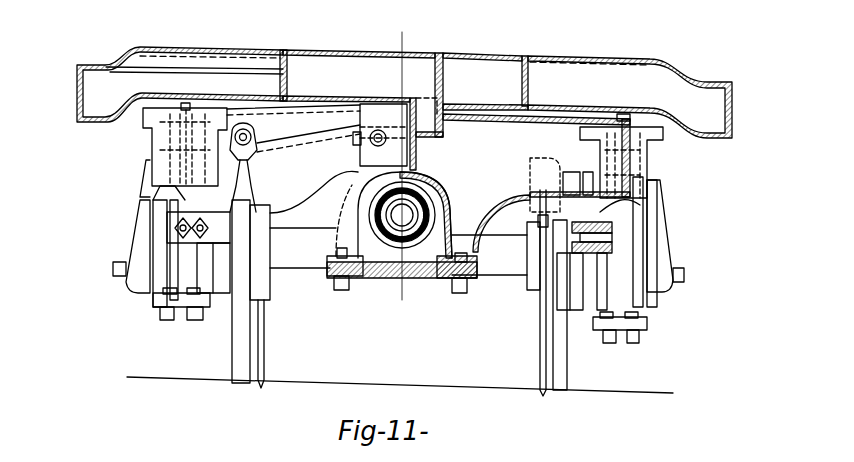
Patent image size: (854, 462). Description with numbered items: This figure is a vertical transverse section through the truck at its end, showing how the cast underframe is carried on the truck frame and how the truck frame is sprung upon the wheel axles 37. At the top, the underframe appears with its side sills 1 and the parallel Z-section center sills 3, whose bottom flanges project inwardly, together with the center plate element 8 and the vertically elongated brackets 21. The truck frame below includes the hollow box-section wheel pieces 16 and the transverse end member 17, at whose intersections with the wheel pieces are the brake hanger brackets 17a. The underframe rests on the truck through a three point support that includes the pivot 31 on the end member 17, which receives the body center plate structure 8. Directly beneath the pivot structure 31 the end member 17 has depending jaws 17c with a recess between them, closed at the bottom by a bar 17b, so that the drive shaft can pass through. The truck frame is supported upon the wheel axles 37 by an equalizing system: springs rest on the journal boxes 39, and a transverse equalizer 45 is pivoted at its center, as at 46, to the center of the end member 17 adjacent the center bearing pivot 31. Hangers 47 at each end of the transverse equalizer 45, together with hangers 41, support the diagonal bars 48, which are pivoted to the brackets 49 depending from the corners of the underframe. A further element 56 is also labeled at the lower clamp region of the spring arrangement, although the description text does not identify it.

The side sill 1 is at (77, 100).
The center sill 3 is at (283, 55).
The center plate element 8 is at (427, 117).
The wheel piece 16 is at (153, 148).
The transverse end member 17 is at (271, 194).
The brake hanger bracket 17a is at (552, 182).
The bar 17b is at (424, 274).
The depending jaw 17c is at (426, 220).
The vertically elongated bracket 21 is at (572, 82).
The pivot 31 is at (428, 126).
The wheel axle 37 is at (300, 258).
The journal box 39 is at (148, 250).
The hanger 41 is at (187, 104).
The transverse equalizer 45 is at (293, 142).
The pivot 46 is at (379, 130).
The hanger 47 is at (248, 163).
The diagonal bar 48 is at (228, 233).
The bracket 49 is at (165, 201).
The clamp plate 56 is at (157, 293).